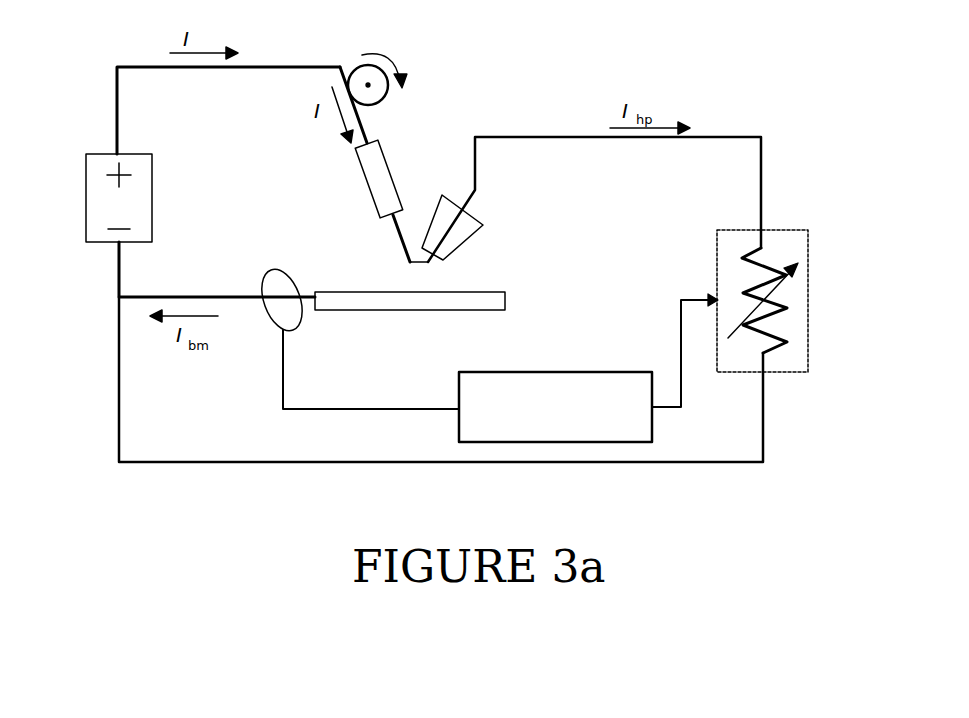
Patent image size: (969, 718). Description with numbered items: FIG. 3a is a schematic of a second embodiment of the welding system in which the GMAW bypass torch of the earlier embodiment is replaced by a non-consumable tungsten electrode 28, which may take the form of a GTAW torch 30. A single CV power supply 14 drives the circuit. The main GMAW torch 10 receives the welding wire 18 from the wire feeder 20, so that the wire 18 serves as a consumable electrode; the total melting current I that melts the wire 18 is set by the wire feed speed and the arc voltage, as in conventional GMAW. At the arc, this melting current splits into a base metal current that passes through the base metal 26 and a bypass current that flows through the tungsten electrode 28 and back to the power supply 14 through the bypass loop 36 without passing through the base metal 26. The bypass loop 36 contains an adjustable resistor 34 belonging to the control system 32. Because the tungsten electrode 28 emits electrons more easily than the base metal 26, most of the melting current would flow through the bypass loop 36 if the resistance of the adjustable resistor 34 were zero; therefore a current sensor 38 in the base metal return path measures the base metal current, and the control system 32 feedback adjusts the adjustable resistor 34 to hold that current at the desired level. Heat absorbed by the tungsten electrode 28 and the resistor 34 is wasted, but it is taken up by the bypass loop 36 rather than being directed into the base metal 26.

The CV power supply 14 is at (103, 203).
The welding wire 18 is at (372, 120).
The wire feeder 20 is at (358, 62).
The main GMAW torch 10 is at (375, 173).
The GTAW torch 30 is at (444, 203).
The non-consumable tungsten electrode 28 is at (428, 262).
The base metal 26 is at (425, 300).
The current sensor 38 is at (272, 270).
The control system 32 is at (580, 348).
The adjustable resistor 34 is at (808, 340).
The bypass loop 36 is at (778, 168).